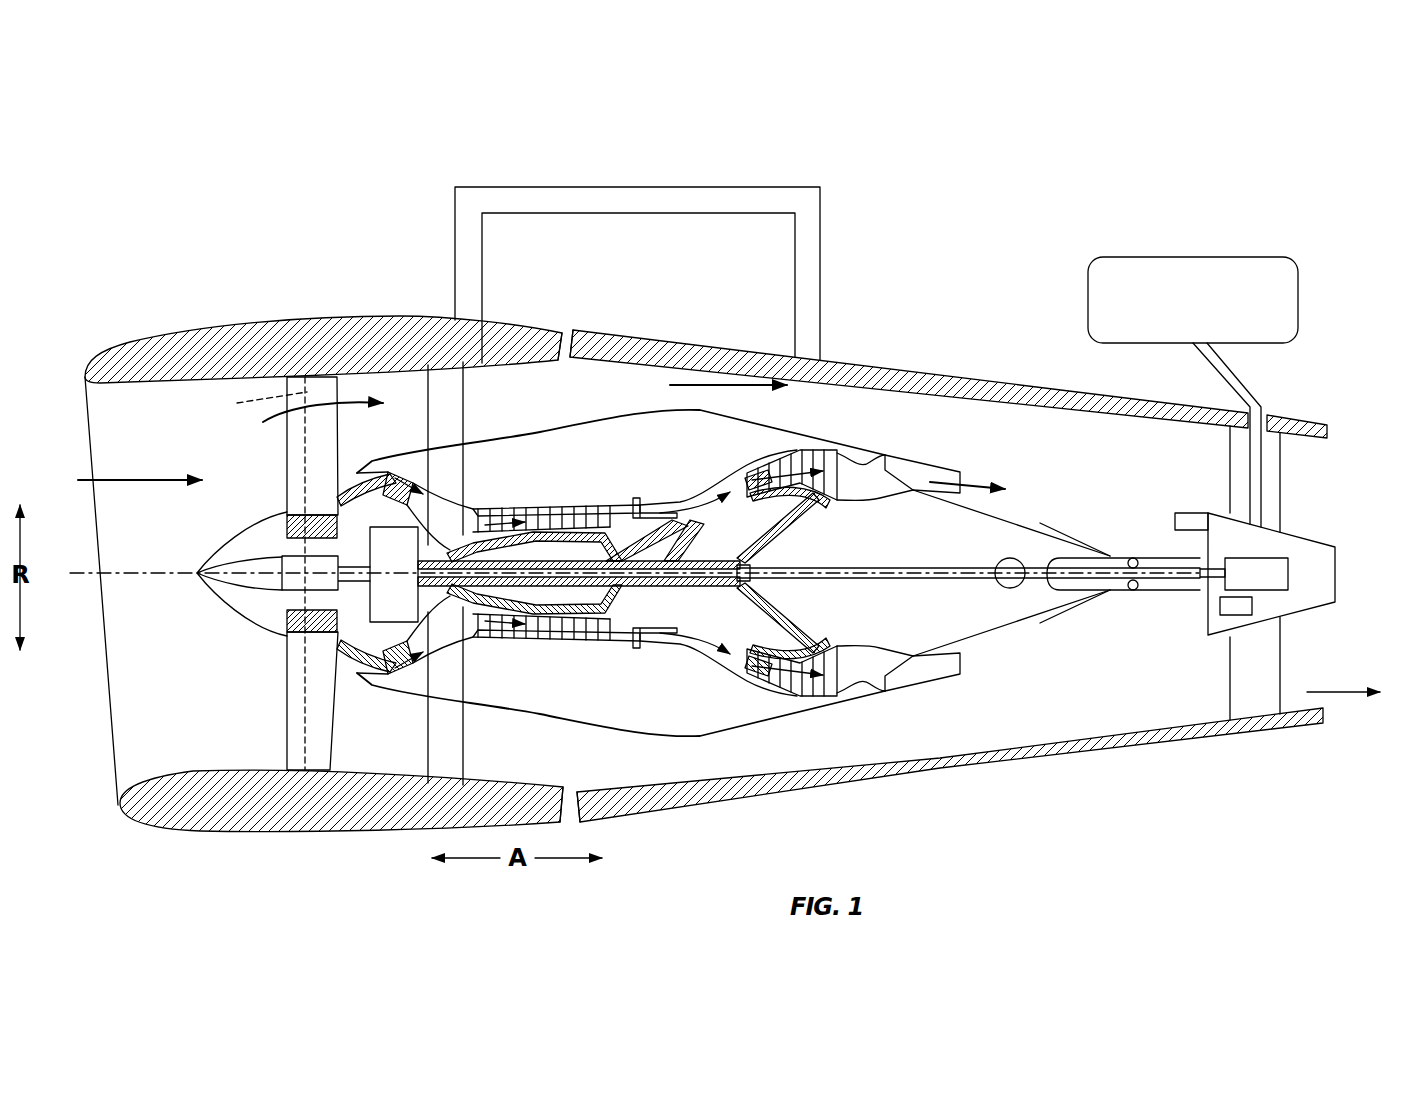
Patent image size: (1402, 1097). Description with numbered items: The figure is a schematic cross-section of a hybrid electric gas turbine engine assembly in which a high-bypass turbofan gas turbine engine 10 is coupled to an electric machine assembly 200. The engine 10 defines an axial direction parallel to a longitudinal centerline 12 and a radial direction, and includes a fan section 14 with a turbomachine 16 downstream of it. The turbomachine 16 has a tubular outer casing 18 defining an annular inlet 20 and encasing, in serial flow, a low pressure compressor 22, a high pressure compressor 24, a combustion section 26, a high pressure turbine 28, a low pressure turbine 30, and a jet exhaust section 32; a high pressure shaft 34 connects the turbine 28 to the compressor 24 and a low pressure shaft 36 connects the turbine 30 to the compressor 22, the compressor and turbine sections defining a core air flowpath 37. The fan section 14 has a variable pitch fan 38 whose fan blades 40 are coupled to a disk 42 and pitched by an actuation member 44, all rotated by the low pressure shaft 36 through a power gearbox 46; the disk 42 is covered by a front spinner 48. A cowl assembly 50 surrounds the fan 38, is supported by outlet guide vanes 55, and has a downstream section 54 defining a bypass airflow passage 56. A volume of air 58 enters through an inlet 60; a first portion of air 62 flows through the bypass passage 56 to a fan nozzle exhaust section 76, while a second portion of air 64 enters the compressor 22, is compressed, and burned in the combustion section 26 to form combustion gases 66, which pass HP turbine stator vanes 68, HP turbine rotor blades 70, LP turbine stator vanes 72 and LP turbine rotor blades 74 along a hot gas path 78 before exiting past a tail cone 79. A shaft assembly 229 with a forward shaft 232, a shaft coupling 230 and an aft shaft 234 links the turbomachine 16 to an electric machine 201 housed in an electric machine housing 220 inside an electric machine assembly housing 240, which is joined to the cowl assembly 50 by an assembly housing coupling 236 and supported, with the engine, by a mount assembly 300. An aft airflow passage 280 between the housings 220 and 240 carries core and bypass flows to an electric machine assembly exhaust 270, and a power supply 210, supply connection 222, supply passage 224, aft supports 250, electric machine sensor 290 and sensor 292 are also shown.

The gas turbine engine 10 is at (565, 288).
The longitudinal centerline 12 is at (908, 562).
The fan section 14 is at (195, 406).
The turbomachine 16 is at (601, 466).
The outer casing 18 is at (605, 730).
The annular inlet 20 is at (366, 677).
The low pressure compressor 22 is at (430, 655).
The high pressure compressor 24 is at (488, 618).
The combustion section 26 is at (648, 644).
The high pressure turbine 28 is at (740, 630).
The low pressure turbine 30 is at (832, 706).
The jet exhaust section 32 is at (887, 665).
The high pressure shaft 34 is at (680, 522).
The low pressure shaft 36 is at (778, 538).
The core air flowpath 37 is at (440, 637).
The fan 38 is at (252, 627).
The fan blades 40 is at (287, 722).
The disk 42 is at (285, 525).
The actuation member 44 is at (282, 563).
The power gearbox 46 is at (418, 532).
The front spinner 48 is at (222, 596).
The cowl assembly 50 is at (313, 830).
The downstream section 54 is at (500, 330).
The outlet guide vanes 55 is at (463, 377).
The bypass airflow passage 56 is at (540, 402).
The volume of air 58 is at (140, 478).
The inlet 60 is at (112, 748).
The first portion of air 62 is at (277, 421).
The second portion of air 64 is at (355, 471).
The combustion gases 66 is at (693, 507).
The HP turbine stator vanes 68 is at (684, 640).
The HP turbine rotor blades 70 is at (673, 633).
The LP turbine stator vanes 72 is at (765, 670).
The LP turbine rotor blades 74 is at (765, 683).
The fan nozzle exhaust section 76 is at (592, 388).
The hot gas path 78 is at (727, 480).
The tail cone 79 is at (1080, 628).
The electric machine assembly 200 is at (899, 290).
The electric machine 201 is at (1280, 565).
The power supply 210 is at (1220, 277).
The electric machine housing 220 is at (1312, 598).
The electric machine supply connection 222 is at (1248, 392).
The supply passage 224 is at (1228, 410).
The shaft assembly 229 is at (963, 593).
The shaft coupling 230 is at (1012, 560).
The forward shaft 232 is at (857, 570).
The aft shaft 234 is at (1070, 565).
The assembly housing coupling 236 is at (572, 328).
The electric machine assembly housing 240 is at (965, 378).
The aft supports 250 is at (1232, 460).
The electric machine assembly exhaust 270 is at (1307, 690).
The aft airflow passage 280 is at (992, 448).
The electric machine sensor 290 is at (1228, 605).
The sensor 292 is at (1187, 513).
The mount assembly 300 is at (683, 170).